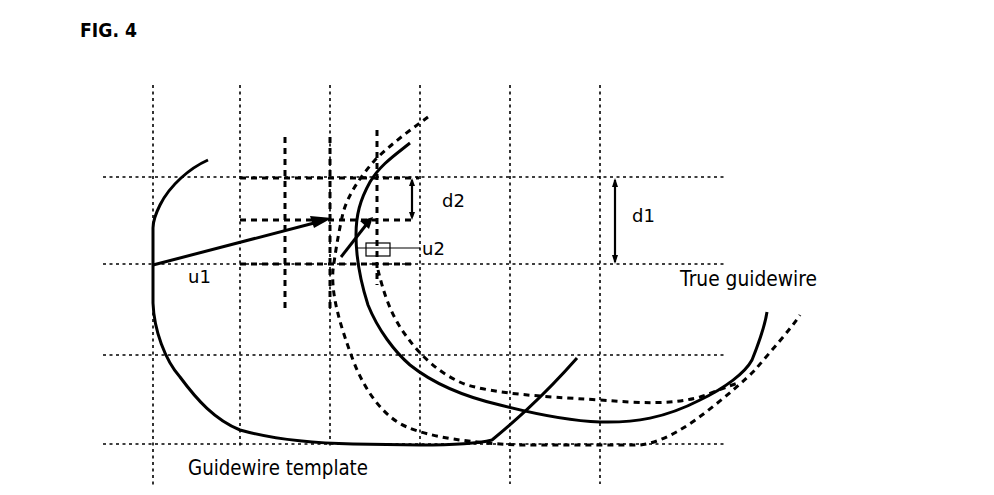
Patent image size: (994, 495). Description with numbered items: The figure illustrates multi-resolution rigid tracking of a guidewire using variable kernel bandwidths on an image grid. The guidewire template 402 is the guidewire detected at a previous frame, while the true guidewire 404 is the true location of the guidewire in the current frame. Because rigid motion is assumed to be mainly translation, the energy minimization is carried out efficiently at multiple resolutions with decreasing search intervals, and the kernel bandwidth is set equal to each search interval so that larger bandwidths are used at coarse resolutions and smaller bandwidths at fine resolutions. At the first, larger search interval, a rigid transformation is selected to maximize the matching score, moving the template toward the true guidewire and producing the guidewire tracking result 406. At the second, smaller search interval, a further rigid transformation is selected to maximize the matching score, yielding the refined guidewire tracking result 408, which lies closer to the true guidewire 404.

The guidewire template 402 is at (200, 421).
The true guidewire 404 is at (397, 318).
The guidewire tracking result 406 is at (343, 375).
The guidewire tracking result 408 is at (420, 338).